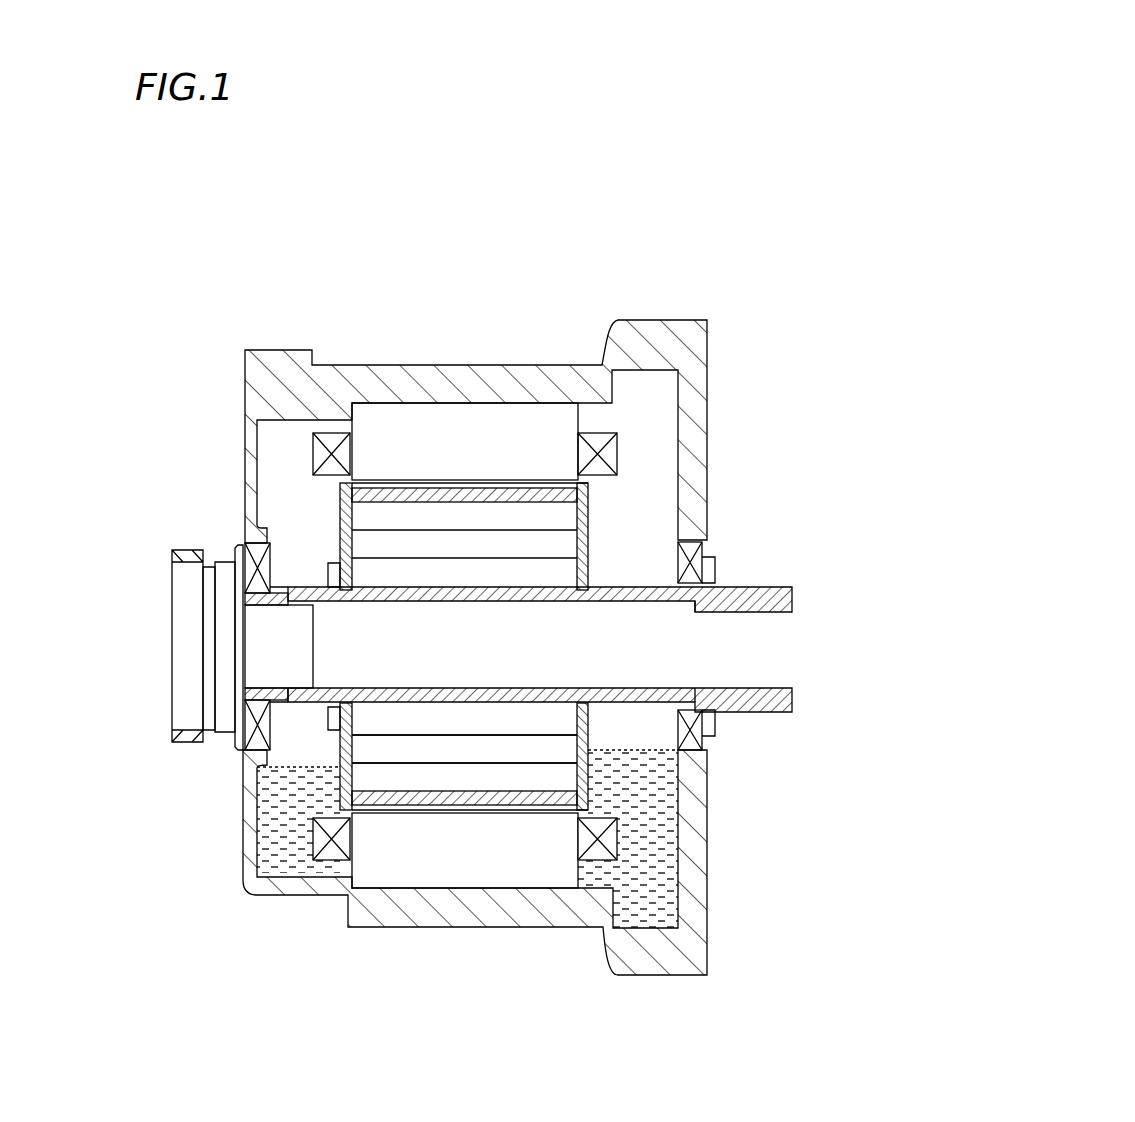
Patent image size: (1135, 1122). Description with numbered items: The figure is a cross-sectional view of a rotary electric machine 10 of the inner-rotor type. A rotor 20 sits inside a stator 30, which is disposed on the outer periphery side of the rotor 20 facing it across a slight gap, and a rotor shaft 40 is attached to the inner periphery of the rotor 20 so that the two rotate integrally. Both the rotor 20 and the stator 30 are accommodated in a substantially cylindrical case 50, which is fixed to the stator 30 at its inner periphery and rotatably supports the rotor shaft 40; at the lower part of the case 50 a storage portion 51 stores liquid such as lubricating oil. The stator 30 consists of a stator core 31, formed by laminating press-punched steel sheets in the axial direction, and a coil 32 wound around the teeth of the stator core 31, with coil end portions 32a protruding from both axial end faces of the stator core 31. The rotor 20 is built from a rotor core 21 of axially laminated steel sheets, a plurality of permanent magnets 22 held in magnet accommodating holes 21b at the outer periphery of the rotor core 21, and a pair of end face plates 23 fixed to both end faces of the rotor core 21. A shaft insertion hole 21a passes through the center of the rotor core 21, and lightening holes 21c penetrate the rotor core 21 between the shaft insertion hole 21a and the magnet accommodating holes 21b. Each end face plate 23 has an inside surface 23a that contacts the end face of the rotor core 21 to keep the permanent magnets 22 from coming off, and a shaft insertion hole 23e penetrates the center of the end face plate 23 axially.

The rotary electric machine 10 is at (538, 180).
The rotor 20 is at (473, 658).
The rotor core 21 is at (464, 642).
The shaft insertion hole 21a is at (507, 705).
The magnet accommodating holes 21b is at (460, 812).
The lightening holes 21c is at (590, 547).
The permanent magnets 22 is at (432, 492).
The end face plates 23 is at (338, 527).
The inside surface 23a is at (333, 442).
The shaft insertion hole 23e is at (584, 601).
The stator 30 is at (615, 428).
The stator core 31 is at (487, 420).
The coil 32 is at (444, 372).
The coil end portions 32a is at (332, 412).
The rotor shaft 40 is at (509, 681).
The case 50 is at (405, 857).
The storage portion 51 is at (290, 845).